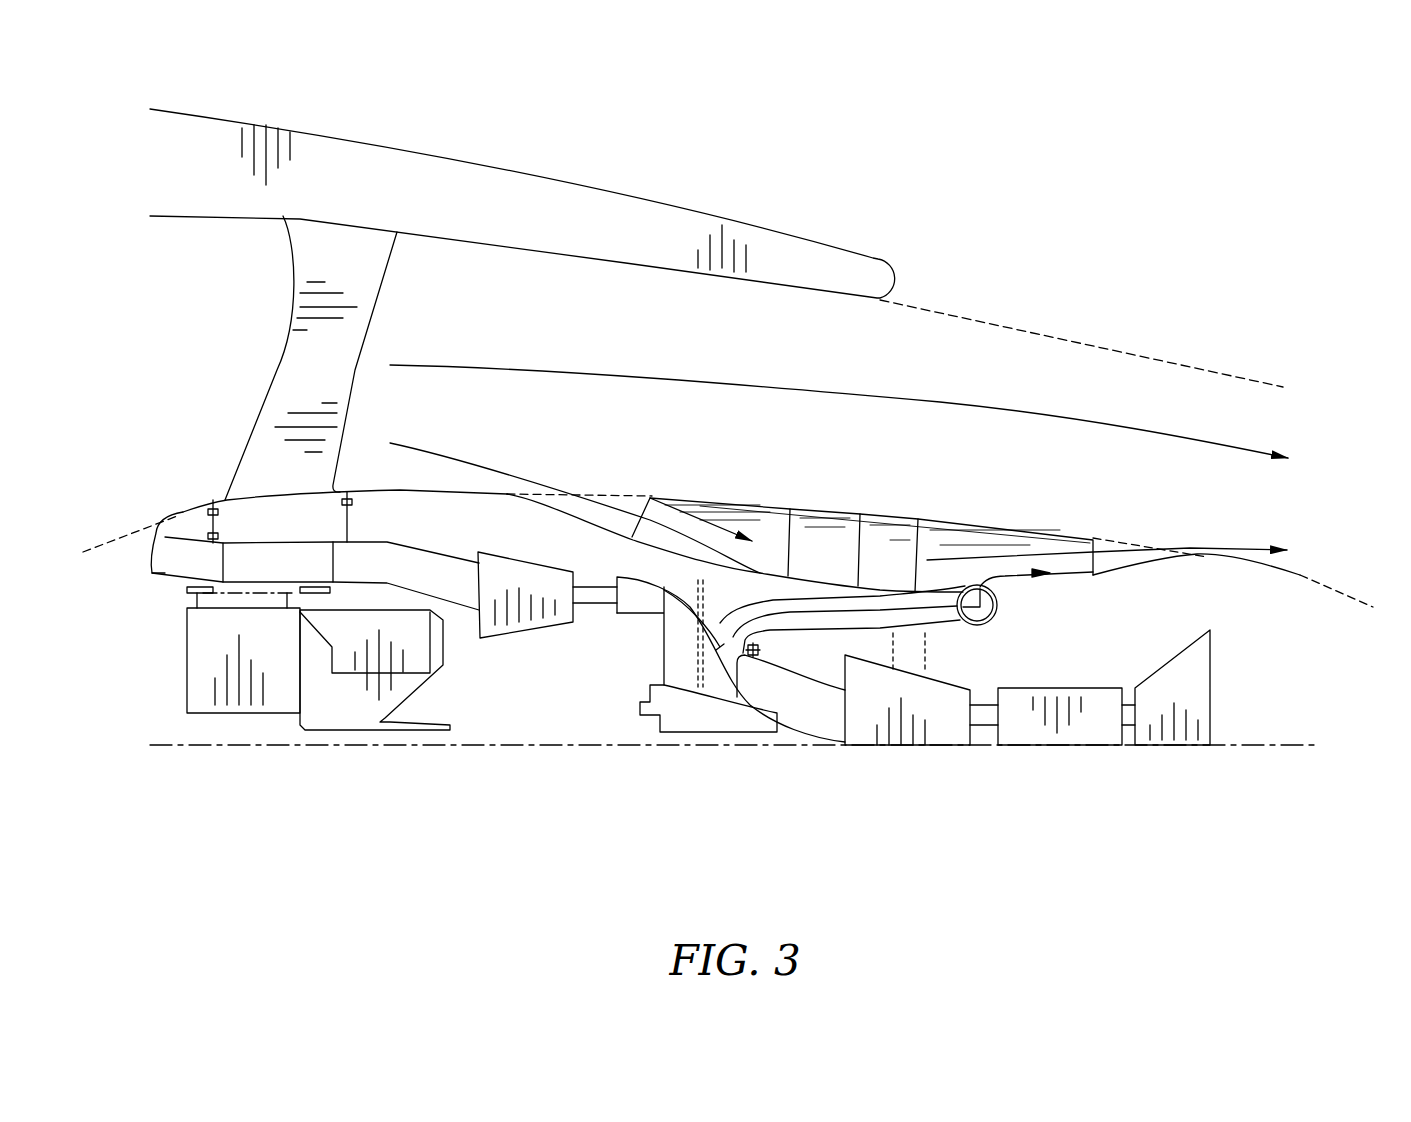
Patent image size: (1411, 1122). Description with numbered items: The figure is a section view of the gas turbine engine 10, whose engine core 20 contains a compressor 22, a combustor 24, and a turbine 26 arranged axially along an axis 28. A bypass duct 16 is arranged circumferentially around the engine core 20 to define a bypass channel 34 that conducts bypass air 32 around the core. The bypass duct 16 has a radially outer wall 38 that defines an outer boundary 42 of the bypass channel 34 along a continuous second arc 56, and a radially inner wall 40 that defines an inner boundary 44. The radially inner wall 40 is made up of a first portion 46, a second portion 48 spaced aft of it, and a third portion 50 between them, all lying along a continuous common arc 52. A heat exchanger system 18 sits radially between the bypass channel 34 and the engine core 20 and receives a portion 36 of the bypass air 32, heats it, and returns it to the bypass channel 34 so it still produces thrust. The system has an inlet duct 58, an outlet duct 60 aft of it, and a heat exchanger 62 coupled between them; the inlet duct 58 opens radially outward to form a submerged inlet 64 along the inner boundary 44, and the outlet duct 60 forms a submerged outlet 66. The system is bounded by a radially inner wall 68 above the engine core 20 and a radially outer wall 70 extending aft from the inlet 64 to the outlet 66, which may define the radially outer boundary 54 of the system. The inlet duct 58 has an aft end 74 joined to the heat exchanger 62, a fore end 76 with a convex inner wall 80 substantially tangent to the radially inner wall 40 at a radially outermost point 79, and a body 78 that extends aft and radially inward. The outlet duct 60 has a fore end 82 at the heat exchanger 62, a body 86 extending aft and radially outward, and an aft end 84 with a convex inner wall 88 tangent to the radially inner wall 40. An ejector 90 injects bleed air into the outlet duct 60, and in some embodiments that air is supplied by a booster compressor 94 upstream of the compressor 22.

The gas turbine engine 10 is at (1160, 170).
The bypass duct 16 is at (620, 178).
The heat exchanger system 18 is at (828, 427).
The engine core 20 is at (1027, 776).
The compressor 22 is at (918, 717).
The combustor 24 is at (1085, 717).
The turbine 26 is at (1180, 717).
The axis 28 is at (180, 745).
The bypass air 32 is at (962, 403).
The bypass channel 34 is at (640, 333).
The portion of the bypass air 36 is at (427, 450).
The radially outer wall 38 is at (805, 293).
The radially inner wall 40 is at (285, 488).
The outer boundary 42 is at (968, 315).
The inner boundary 44 is at (895, 513).
The first portion 46 is at (387, 488).
The second portion 48 is at (1300, 575).
The third portion 50 is at (838, 505).
The common arc 52 is at (1350, 597).
The radially outer boundary 54 is at (942, 522).
The second arc 56 is at (1233, 372).
The inlet duct 58 is at (758, 495).
The outlet duct 60 is at (1043, 520).
The heat exchanger 62 is at (890, 562).
The inlet 64 is at (630, 492).
The outlet 66 is at (1103, 538).
The radially inner wall 68 is at (692, 560).
The radially outer wall 70 is at (725, 528).
The aft end 74 is at (617, 540).
The fore end 76 is at (503, 500).
The body 78 is at (580, 507).
The radially outermost point 79 is at (507, 495).
The convex inner wall 80 is at (543, 490).
The fore end 82 is at (1103, 560).
The aft end 84 is at (1215, 560).
The body 86 is at (1155, 560).
The convex inner wall 88 is at (1183, 552).
The ejector 90 is at (1005, 610).
The booster compressor 94 is at (495, 593).